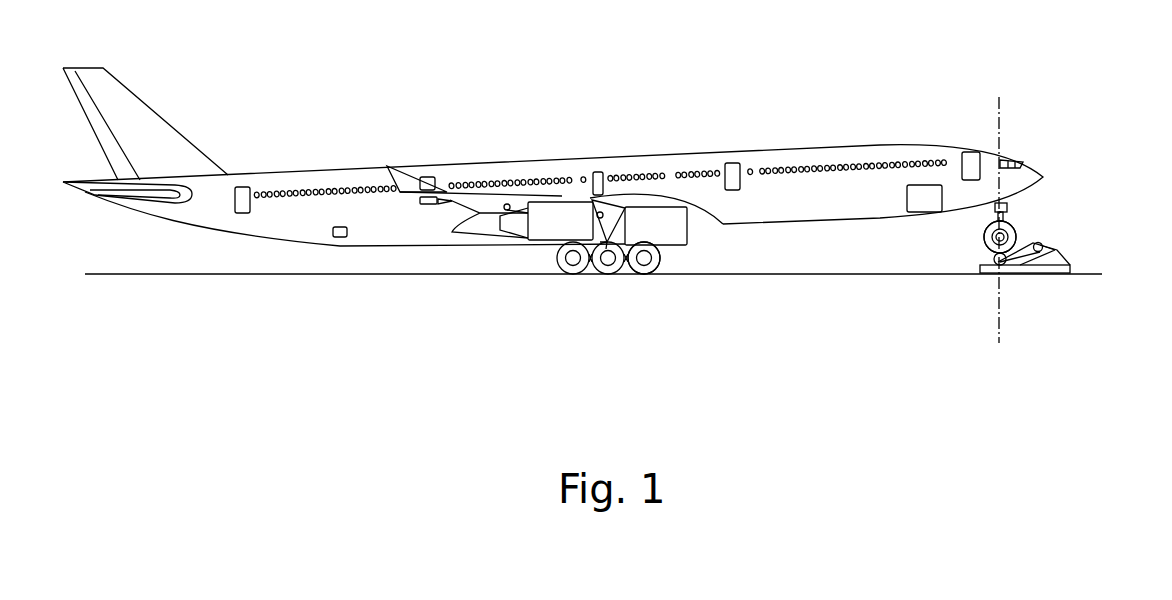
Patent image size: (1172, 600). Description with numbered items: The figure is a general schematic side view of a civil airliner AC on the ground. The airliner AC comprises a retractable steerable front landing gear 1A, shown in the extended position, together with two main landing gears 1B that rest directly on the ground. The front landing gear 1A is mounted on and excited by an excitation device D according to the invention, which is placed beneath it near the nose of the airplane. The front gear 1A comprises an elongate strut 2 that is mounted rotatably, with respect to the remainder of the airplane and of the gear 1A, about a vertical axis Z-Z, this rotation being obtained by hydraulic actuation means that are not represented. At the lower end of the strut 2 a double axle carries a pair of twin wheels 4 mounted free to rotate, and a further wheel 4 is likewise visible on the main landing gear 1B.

The airliner AC is at (817, 134).
The retractable steerable front landing gear 1A is at (1011, 219).
The main landing gear 1B is at (565, 275).
The elongate strut 2 is at (605, 245).
The twin wheels 4 is at (658, 267).
The excitation device D is at (1055, 246).
The vertical axis Z is at (999, 110).